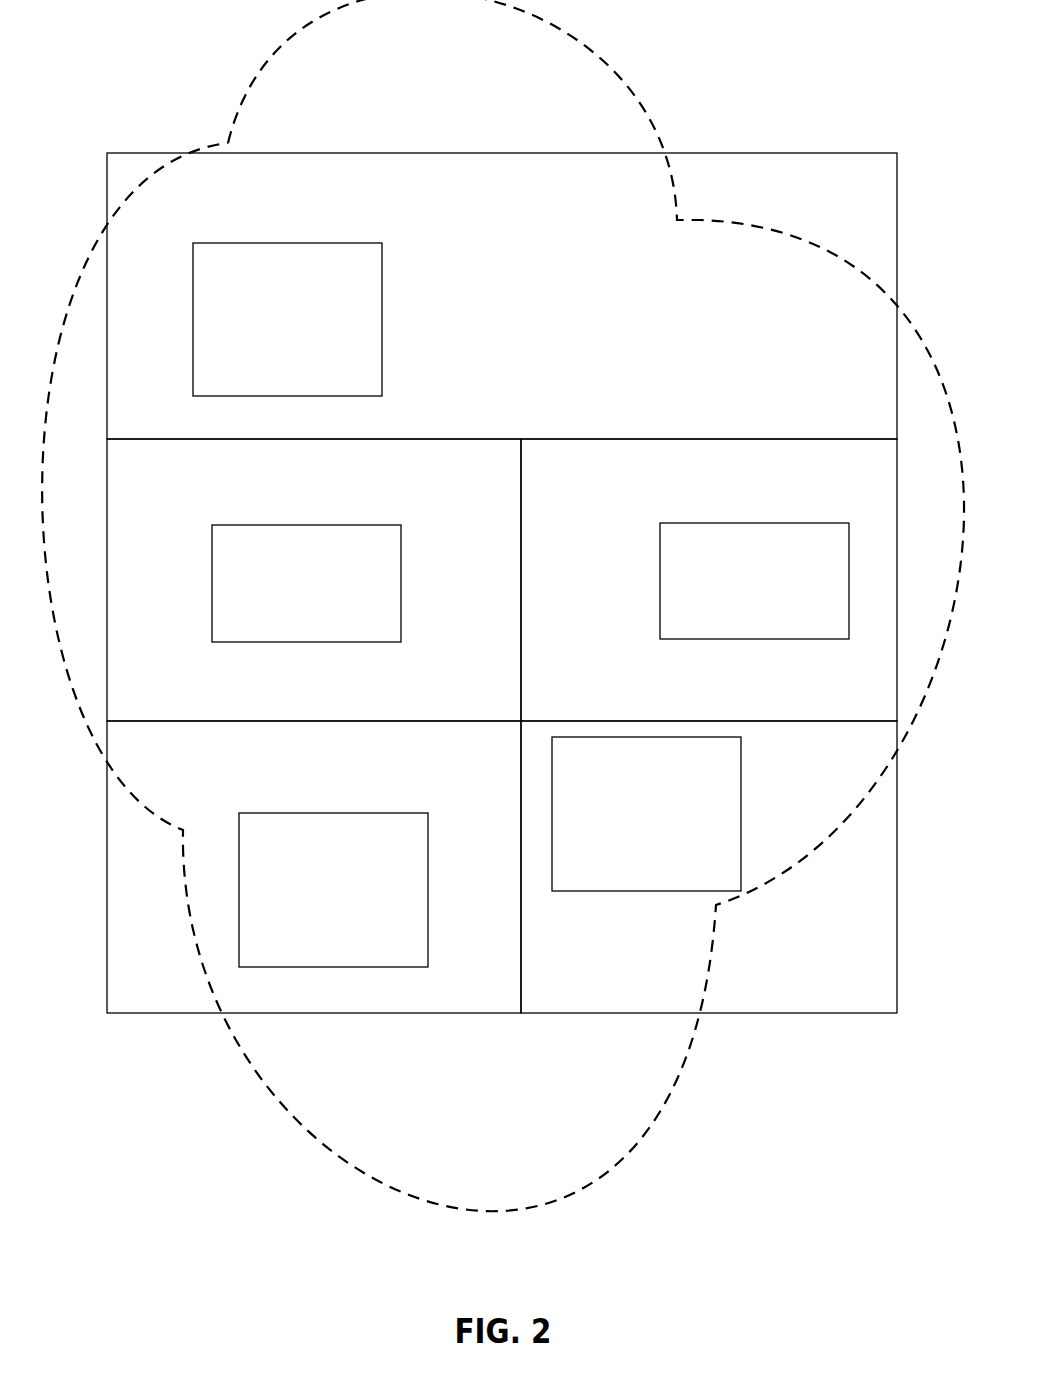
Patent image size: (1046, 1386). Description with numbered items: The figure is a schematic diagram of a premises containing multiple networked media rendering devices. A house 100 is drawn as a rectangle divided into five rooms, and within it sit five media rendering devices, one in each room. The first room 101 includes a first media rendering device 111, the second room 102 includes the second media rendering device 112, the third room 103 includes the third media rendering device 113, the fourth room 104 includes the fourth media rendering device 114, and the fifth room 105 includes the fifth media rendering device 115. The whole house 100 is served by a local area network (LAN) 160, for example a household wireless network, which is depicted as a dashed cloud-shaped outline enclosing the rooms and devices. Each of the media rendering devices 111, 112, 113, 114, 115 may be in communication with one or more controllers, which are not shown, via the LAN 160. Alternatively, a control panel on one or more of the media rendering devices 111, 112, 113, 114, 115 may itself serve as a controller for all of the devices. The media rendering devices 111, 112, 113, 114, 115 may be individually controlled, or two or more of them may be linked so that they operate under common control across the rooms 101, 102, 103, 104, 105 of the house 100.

The house 100 is at (502, 624).
The first room 101 is at (502, 296).
The second room 102 is at (314, 580).
The third room 103 is at (709, 580).
The fourth room 104 is at (314, 867).
The fifth room 105 is at (709, 867).
The first media rendering device 111 is at (267, 331).
The second media rendering device 112 is at (285, 594).
The third media rendering device 113 is at (730, 592).
The fourth media rendering device 114 is at (312, 901).
The fifth media rendering device 115 is at (625, 825).
The local area network (LAN) 160 is at (524, 1146).